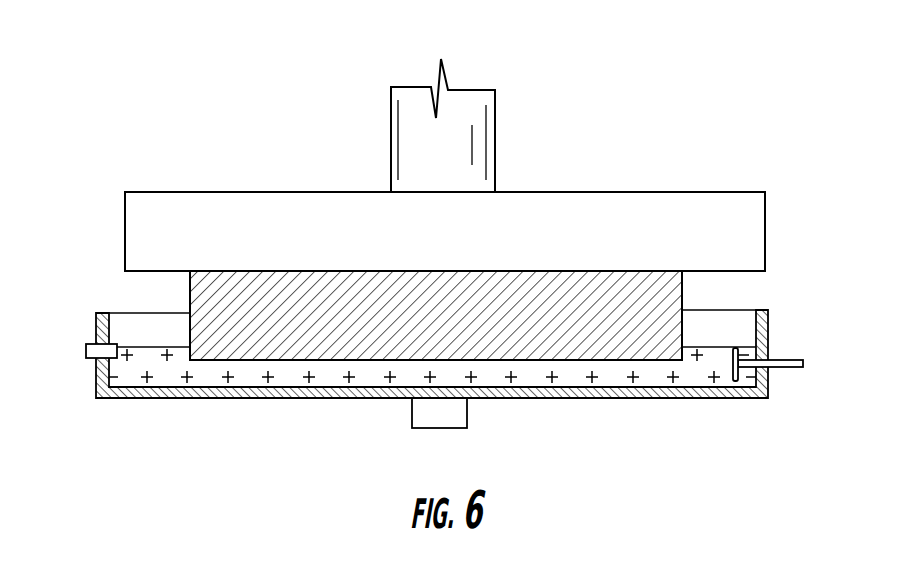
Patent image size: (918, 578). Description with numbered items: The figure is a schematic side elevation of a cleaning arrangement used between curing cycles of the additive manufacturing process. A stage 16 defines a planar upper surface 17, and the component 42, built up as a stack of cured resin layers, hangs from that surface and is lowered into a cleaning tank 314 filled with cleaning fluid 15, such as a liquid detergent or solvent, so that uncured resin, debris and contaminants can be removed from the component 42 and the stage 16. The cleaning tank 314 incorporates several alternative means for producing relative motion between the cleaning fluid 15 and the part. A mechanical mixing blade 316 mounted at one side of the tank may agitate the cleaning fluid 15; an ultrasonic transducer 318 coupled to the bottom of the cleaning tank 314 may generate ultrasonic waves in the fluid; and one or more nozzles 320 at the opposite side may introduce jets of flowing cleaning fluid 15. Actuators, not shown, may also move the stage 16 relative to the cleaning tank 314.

The cleaning fluid 15 is at (145, 360).
The stage 16 is at (683, 207).
The planar upper surface 17 is at (754, 278).
The component 42 is at (672, 293).
The cleaning tank 314 is at (260, 392).
The mechanical mixing blade 316 is at (783, 360).
The ultrasonic transducer 318 is at (438, 417).
The nozzle 320 is at (86, 351).